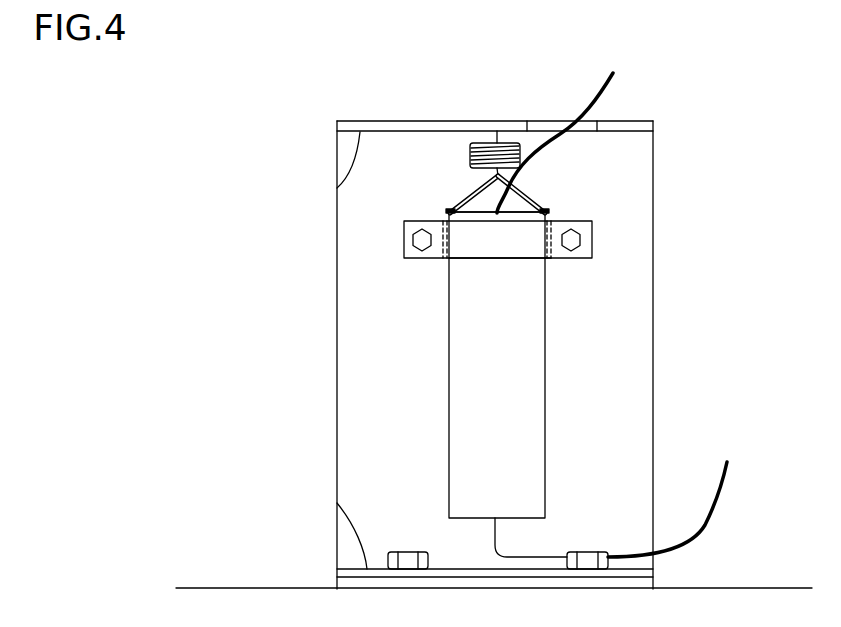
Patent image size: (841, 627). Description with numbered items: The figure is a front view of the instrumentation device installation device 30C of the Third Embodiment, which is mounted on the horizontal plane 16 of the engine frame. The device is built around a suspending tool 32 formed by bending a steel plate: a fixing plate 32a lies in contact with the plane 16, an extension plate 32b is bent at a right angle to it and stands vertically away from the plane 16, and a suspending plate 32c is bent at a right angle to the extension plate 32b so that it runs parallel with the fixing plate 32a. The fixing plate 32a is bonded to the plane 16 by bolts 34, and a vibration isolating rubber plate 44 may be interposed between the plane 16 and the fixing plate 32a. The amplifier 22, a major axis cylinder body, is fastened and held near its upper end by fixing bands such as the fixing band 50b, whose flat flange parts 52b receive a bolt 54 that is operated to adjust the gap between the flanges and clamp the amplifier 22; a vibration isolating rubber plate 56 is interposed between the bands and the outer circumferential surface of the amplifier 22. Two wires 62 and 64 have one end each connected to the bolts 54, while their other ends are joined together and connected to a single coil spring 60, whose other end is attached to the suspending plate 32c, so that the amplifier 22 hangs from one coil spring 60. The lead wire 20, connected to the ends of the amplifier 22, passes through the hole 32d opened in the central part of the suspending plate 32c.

The plane 16 is at (260, 588).
The lead wire 20 is at (613, 88).
The amplifier 22 is at (546, 445).
The instrumentation device installation device 30C is at (665, 372).
The suspending tool 32 is at (228, 267).
The fixing plate 32a is at (337, 503).
The extension plate 32b is at (337, 322).
The suspending plate 32c is at (337, 188).
The hole 32d is at (535, 120).
The bolts 34 is at (408, 552).
The vibration isolating rubber plate 44 is at (628, 577).
The fixing band 50b is at (470, 263).
The flange parts 52b is at (414, 260).
The bolt 54 is at (581, 238).
The vibration isolating rubber plate 56 is at (542, 263).
The coil spring 60 is at (472, 160).
The wire 62 is at (473, 195).
The wire 64 is at (523, 195).